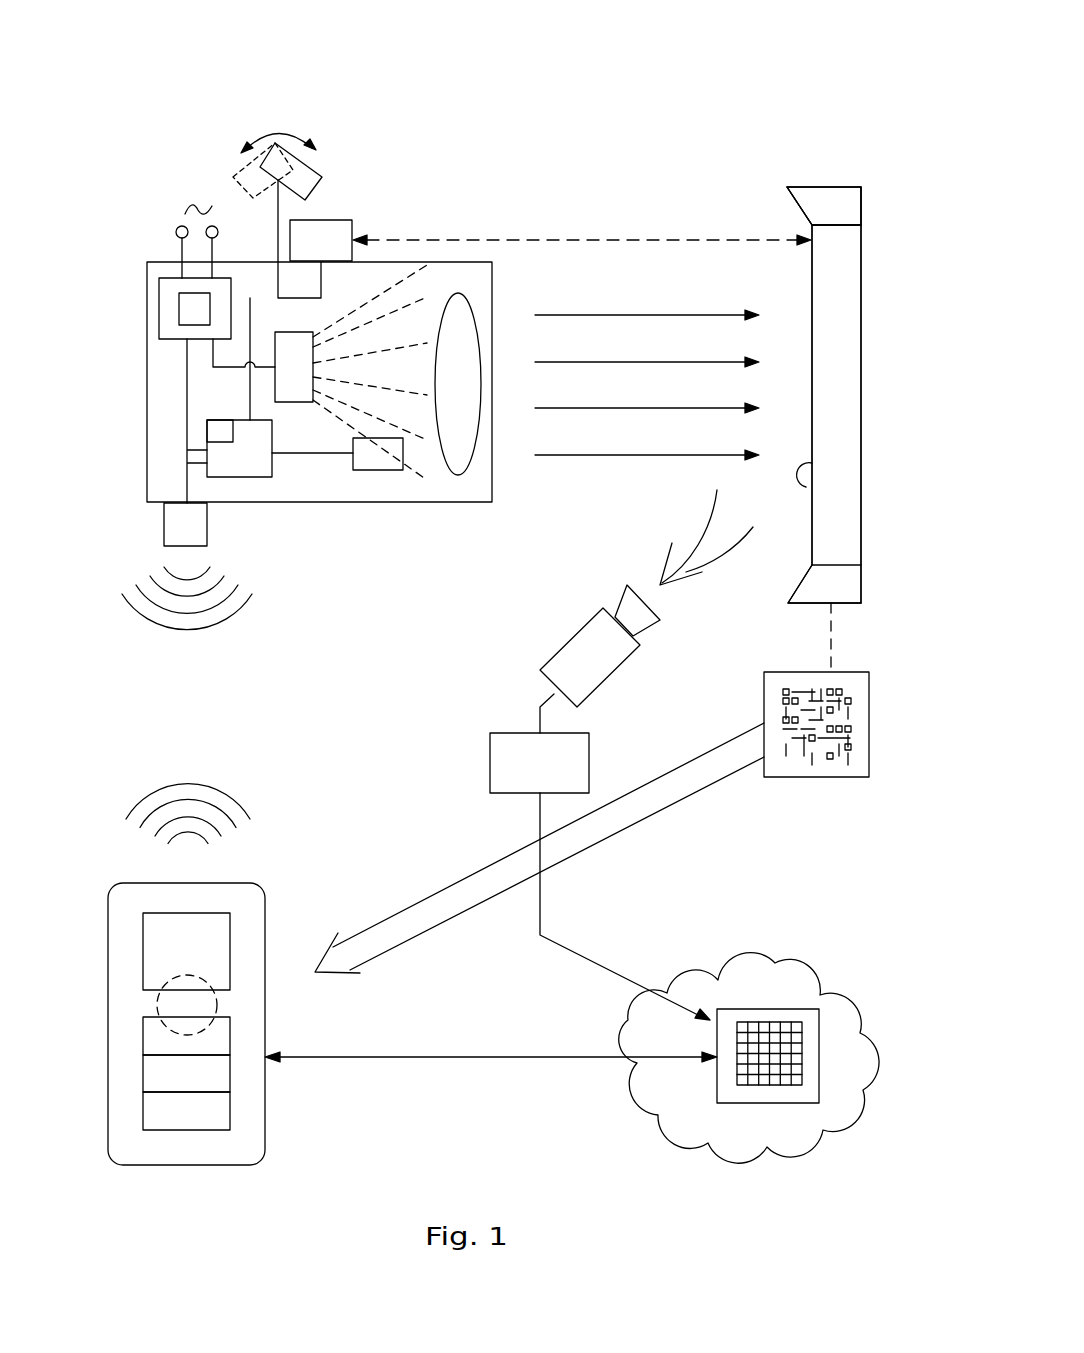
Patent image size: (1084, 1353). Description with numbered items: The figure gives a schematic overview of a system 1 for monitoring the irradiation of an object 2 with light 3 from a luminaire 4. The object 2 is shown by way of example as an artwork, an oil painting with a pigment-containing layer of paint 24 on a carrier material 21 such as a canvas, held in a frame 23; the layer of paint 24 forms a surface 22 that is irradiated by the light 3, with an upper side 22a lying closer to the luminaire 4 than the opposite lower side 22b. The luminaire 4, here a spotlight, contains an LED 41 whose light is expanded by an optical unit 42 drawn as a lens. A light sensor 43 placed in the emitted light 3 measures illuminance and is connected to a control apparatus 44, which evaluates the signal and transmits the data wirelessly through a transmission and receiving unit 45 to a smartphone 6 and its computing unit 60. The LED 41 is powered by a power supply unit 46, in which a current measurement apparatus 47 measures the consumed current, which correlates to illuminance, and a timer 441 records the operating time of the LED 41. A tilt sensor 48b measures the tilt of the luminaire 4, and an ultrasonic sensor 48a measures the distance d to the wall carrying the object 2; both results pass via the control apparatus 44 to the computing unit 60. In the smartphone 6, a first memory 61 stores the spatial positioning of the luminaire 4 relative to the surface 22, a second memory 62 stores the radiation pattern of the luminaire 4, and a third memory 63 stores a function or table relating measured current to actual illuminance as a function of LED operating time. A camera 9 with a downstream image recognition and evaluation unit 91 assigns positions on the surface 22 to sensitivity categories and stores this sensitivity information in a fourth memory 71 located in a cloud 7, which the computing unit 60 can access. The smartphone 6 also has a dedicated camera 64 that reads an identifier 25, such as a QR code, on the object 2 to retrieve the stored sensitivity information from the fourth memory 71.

The system 1 is at (668, 105).
The object 2 is at (837, 408).
The light 3 is at (417, 313).
The luminaire 4 is at (442, 502).
The smartphone 6 is at (265, 917).
The cloud 7 is at (811, 1178).
The camera 9 is at (563, 662).
The carrier material 21 is at (830, 327).
The surface 22 is at (806, 487).
The upper side 22a is at (777, 210).
The lower side 22b is at (788, 565).
The frame 23 is at (833, 203).
The layer of paint 24 is at (815, 273).
The identifier 25 is at (850, 713).
The LED 41 is at (287, 403).
The optical unit 42 is at (475, 460).
The light sensor 43 is at (378, 472).
The control apparatus 44 is at (236, 478).
The transmission and receiving unit 45 is at (165, 517).
The power supply unit 46 is at (168, 328).
The current measurement apparatus 47 is at (180, 300).
The ultrasonic sensor 48a is at (312, 162).
The tilt sensor 48b is at (337, 218).
The computing unit 60 is at (143, 950).
The first memory 61 is at (150, 1038).
The second memory 62 is at (150, 1080).
The third memory 63 is at (150, 1118).
The camera 64 is at (220, 1002).
The fourth memory 71 is at (803, 1047).
The image recognition and evaluation unit 91 is at (539, 763).
The timer 441 is at (220, 425).
The distance d is at (505, 238).